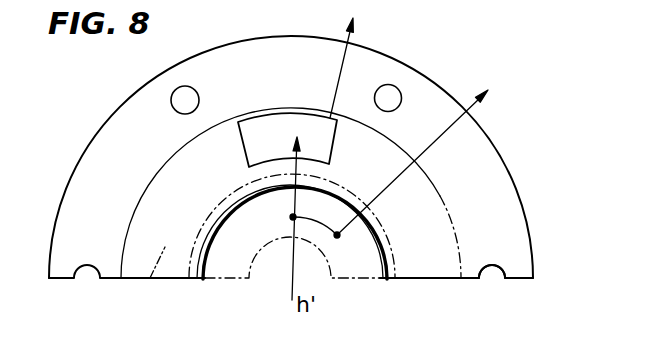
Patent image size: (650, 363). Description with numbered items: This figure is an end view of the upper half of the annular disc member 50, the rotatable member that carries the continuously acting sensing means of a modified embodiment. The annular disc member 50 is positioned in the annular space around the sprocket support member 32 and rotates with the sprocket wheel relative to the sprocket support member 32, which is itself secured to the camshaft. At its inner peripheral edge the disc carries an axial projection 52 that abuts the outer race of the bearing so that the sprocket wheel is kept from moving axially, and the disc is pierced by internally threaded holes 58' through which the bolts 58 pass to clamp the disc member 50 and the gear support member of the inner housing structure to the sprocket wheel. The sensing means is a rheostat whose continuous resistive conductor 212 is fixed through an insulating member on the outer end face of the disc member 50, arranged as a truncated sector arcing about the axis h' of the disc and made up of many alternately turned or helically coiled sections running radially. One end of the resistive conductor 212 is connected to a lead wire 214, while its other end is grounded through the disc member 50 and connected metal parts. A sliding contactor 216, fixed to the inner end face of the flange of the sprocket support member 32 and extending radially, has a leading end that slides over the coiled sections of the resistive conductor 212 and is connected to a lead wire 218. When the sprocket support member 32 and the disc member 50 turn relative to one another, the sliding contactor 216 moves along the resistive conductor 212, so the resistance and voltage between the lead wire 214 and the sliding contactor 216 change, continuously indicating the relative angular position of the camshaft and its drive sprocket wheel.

The annular disc member 50 is at (531, 243).
The bolts 58 is at (324, 79).
The internally threaded holes 58' is at (501, 291).
The sprocket support member 32 is at (150, 278).
The axial projection 52 is at (404, 279).
The resistive conductor 212 is at (337, 143).
The lead wire 214 is at (358, 38).
The sliding contactor 216 is at (295, 148).
The lead wire 218 is at (470, 107).